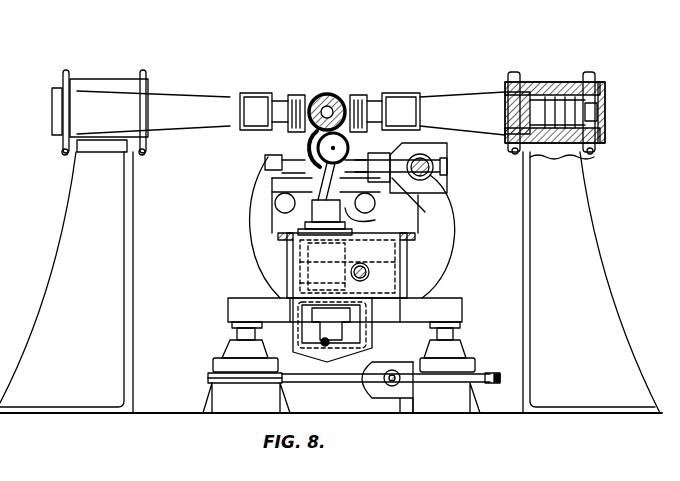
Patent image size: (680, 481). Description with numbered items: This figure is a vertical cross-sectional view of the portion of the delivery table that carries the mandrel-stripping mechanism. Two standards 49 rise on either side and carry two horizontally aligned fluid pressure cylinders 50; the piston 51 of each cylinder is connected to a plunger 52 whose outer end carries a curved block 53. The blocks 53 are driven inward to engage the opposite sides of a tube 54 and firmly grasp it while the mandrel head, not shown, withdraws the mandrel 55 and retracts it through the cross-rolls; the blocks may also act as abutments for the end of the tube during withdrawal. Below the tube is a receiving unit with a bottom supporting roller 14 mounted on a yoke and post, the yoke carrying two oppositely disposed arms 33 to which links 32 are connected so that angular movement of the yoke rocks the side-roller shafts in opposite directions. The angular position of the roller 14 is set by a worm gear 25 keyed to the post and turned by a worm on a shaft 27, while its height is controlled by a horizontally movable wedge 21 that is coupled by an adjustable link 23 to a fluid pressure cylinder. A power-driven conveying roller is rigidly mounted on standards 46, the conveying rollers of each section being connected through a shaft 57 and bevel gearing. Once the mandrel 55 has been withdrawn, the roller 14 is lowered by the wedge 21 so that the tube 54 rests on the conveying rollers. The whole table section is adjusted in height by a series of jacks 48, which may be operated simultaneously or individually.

The bottom supporting roller 14 is at (308, 148).
The wedge 21 is at (352, 330).
The link 23 is at (326, 346).
The worm gear 25 is at (300, 283).
The shaft 27 is at (357, 263).
The link 32 is at (276, 206).
The arm 33 is at (356, 213).
The standard 46 is at (268, 165).
The jack 48 is at (232, 366).
The standard 49 is at (100, 85).
The fluid pressure cylinder 50 is at (52, 107).
The piston 51 is at (596, 112).
The plunger 52 is at (458, 108).
The curved block 53 is at (353, 98).
The tube 54 is at (330, 94).
The mandrel 55 is at (320, 95).
The shaft 57 is at (426, 177).